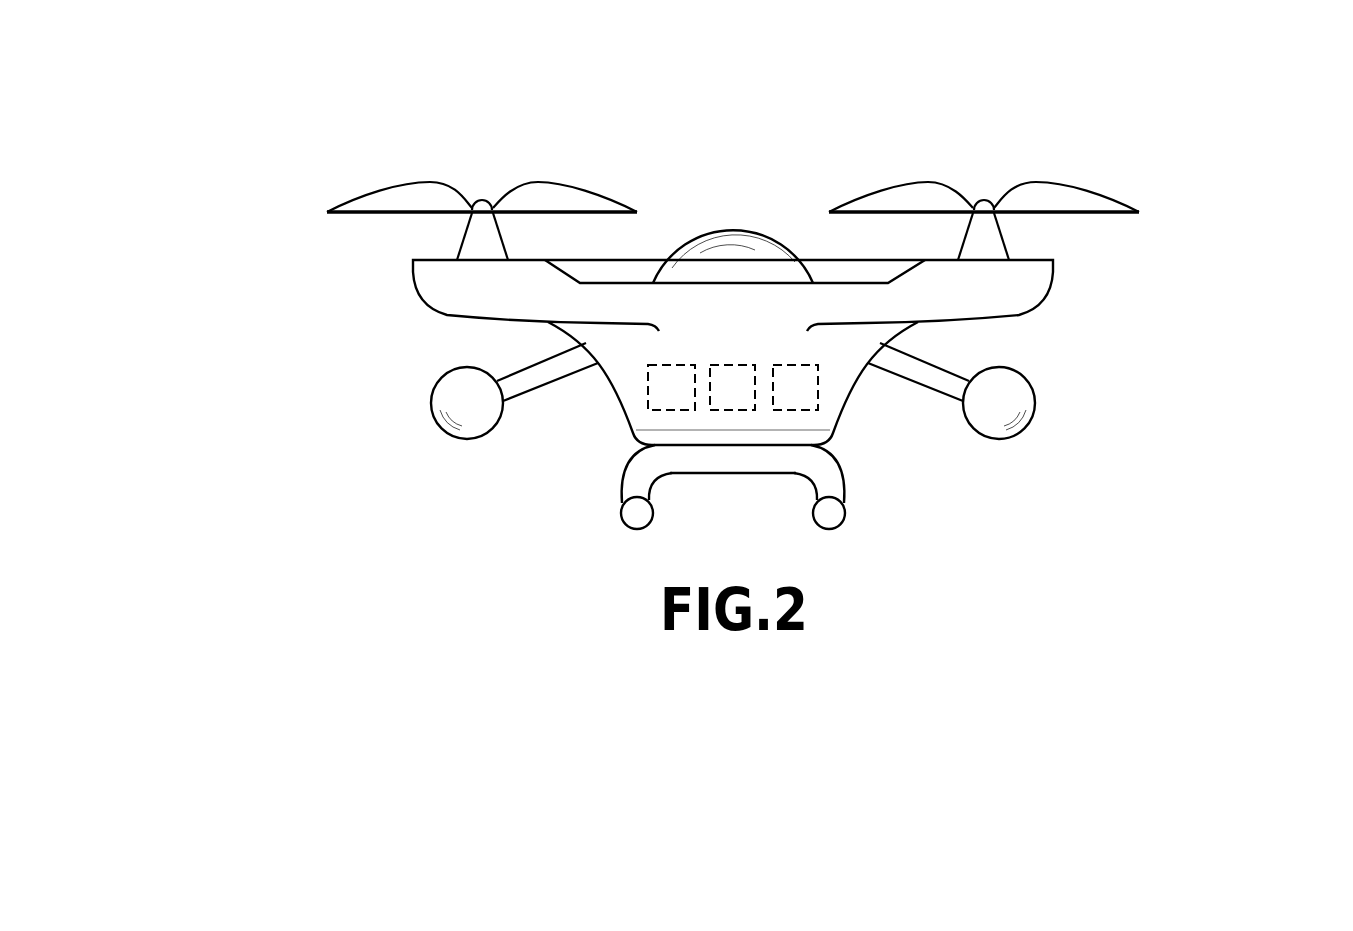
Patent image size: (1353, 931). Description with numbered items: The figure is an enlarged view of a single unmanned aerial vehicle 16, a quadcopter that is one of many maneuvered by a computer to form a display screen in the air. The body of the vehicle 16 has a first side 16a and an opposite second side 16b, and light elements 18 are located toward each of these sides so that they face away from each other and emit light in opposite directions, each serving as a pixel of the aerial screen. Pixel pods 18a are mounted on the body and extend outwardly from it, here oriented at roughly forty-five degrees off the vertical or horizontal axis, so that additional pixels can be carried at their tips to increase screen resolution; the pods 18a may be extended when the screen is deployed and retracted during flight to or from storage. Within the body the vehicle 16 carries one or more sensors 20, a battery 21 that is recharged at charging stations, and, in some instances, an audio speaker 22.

The unmanned aerial vehicle 16 is at (934, 83).
The first side 16a is at (286, 311).
The second side 16b is at (1180, 311).
The light element 18 is at (420, 377).
The pixel pod 18a is at (538, 362).
The sensor 20 is at (650, 387).
The battery 21 is at (731, 400).
The audio speaker 22 is at (816, 387).